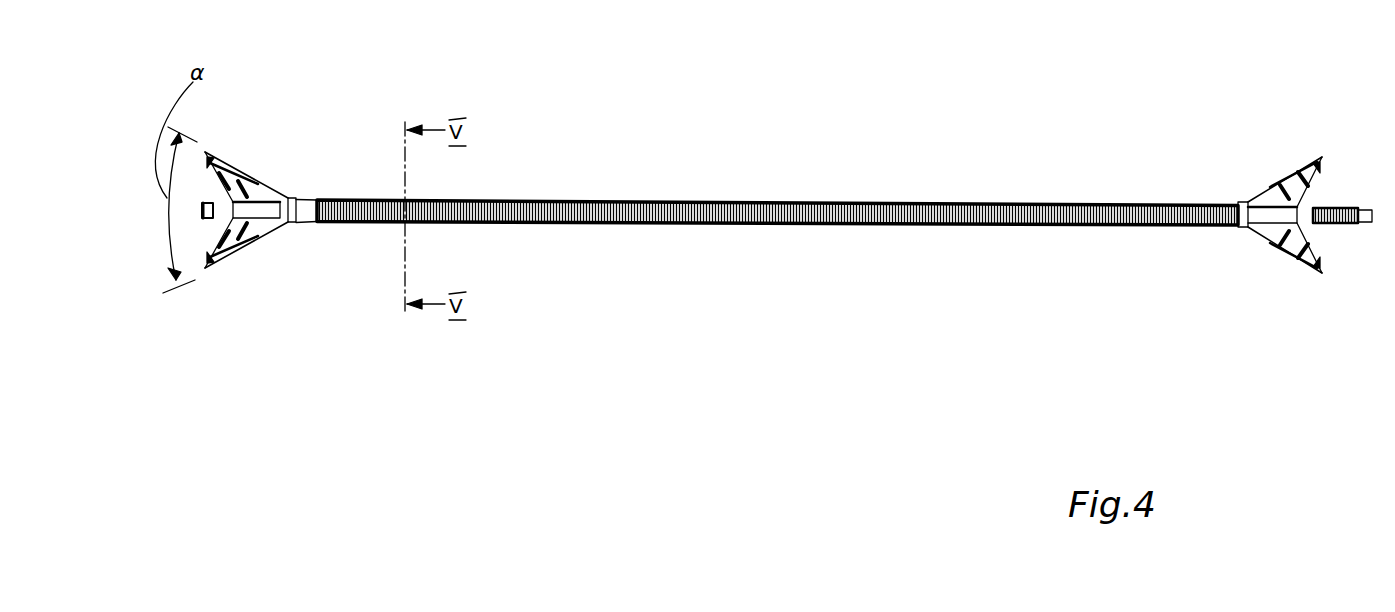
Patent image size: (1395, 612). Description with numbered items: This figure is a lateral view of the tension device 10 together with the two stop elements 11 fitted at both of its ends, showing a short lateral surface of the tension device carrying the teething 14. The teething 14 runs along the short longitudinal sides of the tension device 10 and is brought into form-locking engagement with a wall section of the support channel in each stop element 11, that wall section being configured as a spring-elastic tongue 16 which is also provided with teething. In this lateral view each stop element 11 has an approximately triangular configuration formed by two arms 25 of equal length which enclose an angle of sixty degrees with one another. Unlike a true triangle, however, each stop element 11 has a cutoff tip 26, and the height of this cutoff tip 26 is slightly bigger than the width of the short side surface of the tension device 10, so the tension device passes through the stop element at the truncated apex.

The tension device 10 is at (868, 176).
The stop element 11 is at (1242, 250).
The teething 14 is at (822, 225).
The spring-elastic tongue 16 is at (265, 212).
The arm 25 is at (243, 167).
The cutoff tip 26 is at (297, 197).